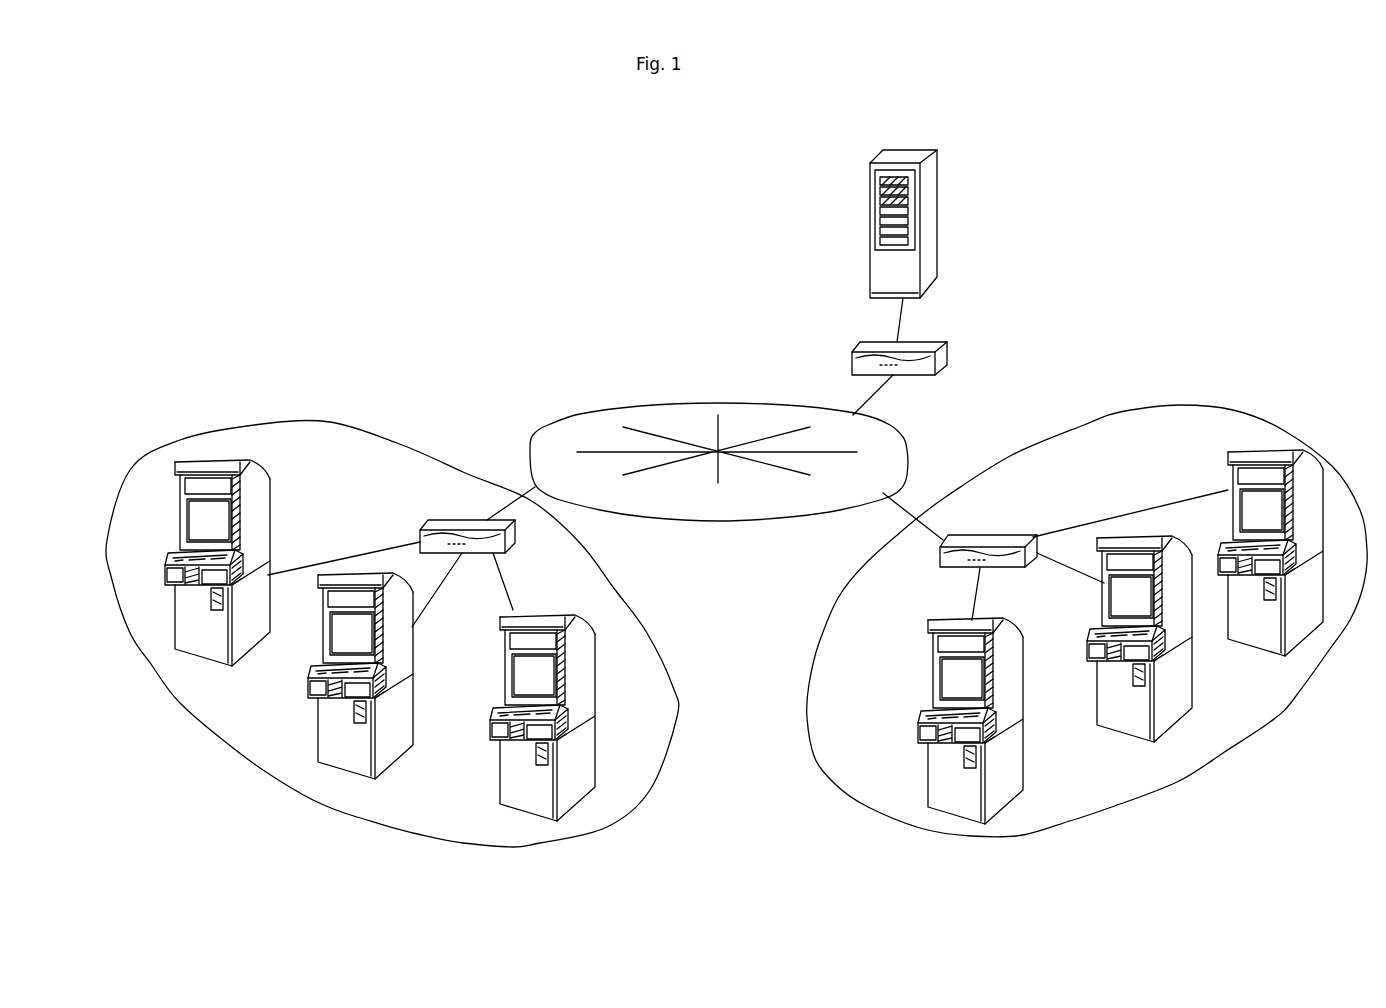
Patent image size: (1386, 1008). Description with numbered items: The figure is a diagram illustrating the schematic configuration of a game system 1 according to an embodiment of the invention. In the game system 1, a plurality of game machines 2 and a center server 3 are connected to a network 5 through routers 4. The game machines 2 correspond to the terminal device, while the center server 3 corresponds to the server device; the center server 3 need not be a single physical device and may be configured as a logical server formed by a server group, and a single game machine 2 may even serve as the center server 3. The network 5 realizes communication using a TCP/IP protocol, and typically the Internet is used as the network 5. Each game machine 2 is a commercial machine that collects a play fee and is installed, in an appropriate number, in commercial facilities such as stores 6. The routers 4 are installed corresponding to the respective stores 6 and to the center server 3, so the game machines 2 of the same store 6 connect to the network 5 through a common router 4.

The game system 1 is at (1027, 331).
The game machine 2 is at (507, 768).
The center server 3 is at (867, 205).
The router 4 is at (850, 360).
The network 5 is at (663, 403).
The store 6 is at (330, 422).